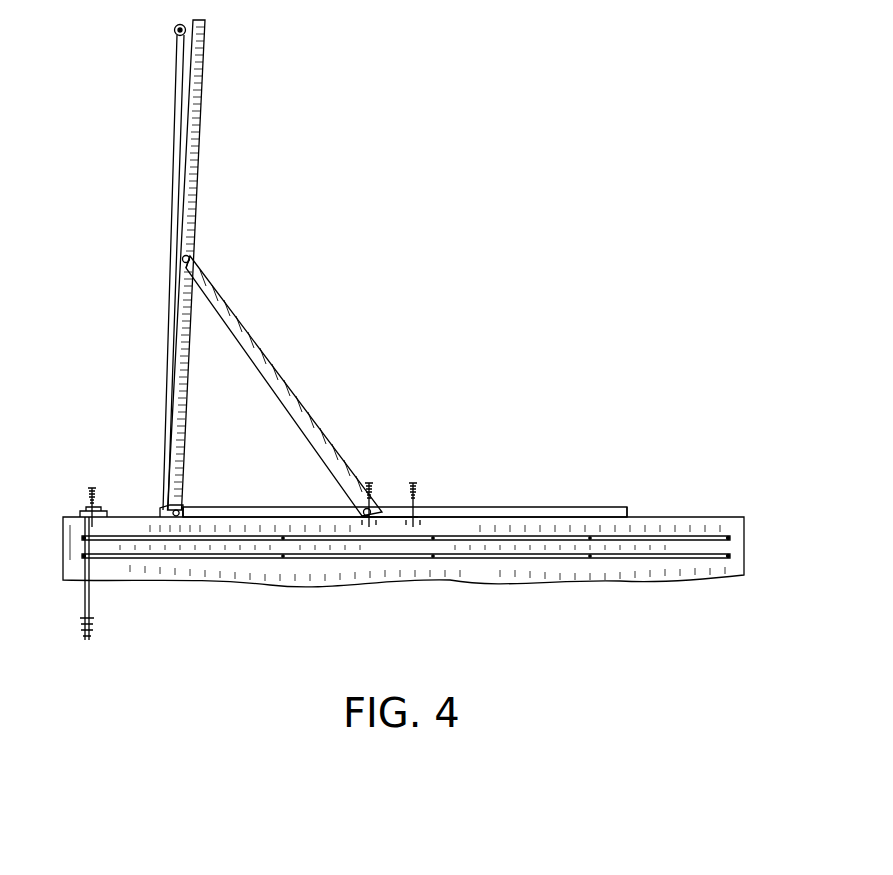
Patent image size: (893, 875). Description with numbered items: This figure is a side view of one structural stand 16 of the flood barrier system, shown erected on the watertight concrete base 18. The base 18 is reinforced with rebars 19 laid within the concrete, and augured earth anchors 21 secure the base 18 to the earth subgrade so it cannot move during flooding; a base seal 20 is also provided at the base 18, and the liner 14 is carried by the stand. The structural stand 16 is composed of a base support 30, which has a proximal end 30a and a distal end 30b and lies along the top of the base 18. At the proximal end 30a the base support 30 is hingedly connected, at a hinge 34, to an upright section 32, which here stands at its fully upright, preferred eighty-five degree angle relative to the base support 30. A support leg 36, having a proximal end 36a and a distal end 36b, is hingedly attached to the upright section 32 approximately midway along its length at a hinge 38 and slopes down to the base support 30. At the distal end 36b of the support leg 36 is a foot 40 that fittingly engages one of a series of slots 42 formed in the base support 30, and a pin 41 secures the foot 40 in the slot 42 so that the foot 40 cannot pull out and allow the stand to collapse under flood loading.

The liner 14 is at (171, 352).
The structural stand 16 is at (125, 205).
The base 18 is at (483, 582).
The rebars 19 is at (571, 560).
The base seal 20 is at (84, 511).
The augured earth anchors 21 is at (84, 596).
The base support 30 is at (517, 507).
The proximal end of base support 30a is at (178, 520).
The distal end of base support 30b is at (627, 512).
The upright section 32 is at (185, 100).
The hinge 34 is at (173, 510).
The support leg 36 is at (280, 384).
The proximal end of support leg 36a is at (190, 258).
The distal end of support leg 36b is at (370, 507).
The hinge 38 is at (182, 260).
The foot 40 is at (377, 522).
The pin 41 is at (369, 483).
The slots 42 is at (355, 522).